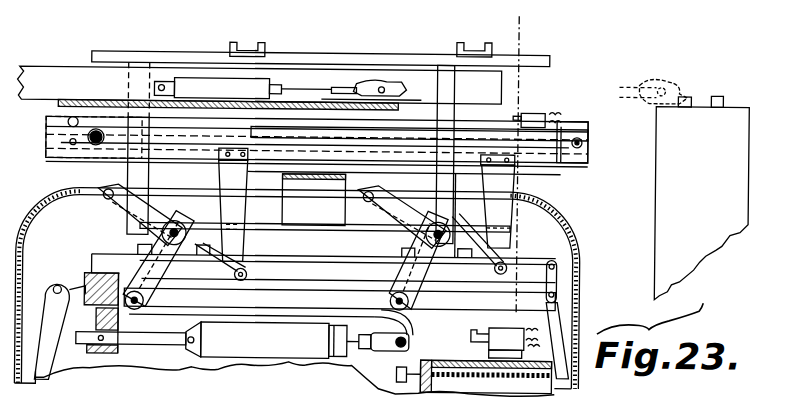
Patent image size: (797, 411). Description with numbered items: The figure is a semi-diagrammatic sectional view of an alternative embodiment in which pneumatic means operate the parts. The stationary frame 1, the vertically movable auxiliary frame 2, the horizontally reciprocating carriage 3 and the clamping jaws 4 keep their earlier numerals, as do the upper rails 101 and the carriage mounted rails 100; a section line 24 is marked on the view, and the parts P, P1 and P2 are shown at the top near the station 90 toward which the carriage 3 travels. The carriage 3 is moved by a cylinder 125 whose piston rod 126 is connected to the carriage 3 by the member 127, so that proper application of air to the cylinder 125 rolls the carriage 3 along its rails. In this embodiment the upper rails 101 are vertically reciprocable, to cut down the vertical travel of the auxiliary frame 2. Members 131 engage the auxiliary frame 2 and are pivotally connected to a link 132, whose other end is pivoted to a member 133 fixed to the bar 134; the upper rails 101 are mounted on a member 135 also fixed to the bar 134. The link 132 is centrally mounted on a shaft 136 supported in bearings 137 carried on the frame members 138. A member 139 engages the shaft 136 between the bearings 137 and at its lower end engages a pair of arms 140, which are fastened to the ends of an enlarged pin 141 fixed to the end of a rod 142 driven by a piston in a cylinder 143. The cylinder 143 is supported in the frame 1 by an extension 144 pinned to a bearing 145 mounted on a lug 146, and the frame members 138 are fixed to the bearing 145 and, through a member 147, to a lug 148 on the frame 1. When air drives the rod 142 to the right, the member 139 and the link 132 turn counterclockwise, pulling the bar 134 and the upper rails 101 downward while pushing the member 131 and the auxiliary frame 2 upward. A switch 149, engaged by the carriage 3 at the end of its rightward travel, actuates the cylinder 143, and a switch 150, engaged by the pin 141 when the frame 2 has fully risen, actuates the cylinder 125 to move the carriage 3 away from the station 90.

The stationary frame 1 is at (580, 228).
The vertically movable auxiliary frame 2 is at (570, 161).
The horizontally reciprocating carriage 3 is at (112, 102).
The clamping jaws 4 is at (396, 83).
The section line 24 is at (506, 25).
The station 90 is at (748, 122).
The carriage mounted rails 100 is at (62, 78).
The upper rails 101 is at (370, 55).
The cylinder 125 is at (468, 127).
The rod 126 is at (180, 143).
The member 127 is at (78, 158).
The members 131 is at (284, 174).
The link 132 is at (210, 218).
The member 133 is at (98, 216).
The bar 134 is at (326, 240).
The member 135 is at (128, 172).
The shaft 136 is at (160, 239).
The bearings 137 is at (218, 275).
The frame members 138 is at (312, 263).
The member 139 is at (162, 272).
The arms 140 is at (344, 296).
The enlarged pin 141 is at (402, 350).
The rod 142 is at (356, 349).
The cylinder 143 is at (300, 359).
The extension 144 is at (162, 349).
The bearing 145 is at (82, 282).
The lug 146 is at (56, 350).
The member 147 is at (557, 276).
The lug 148 is at (558, 318).
The switch 149 is at (542, 110).
The switch 150 is at (488, 338).
The part P is at (720, 92).
The clip part P1 is at (456, 43).
The clip part P2 is at (238, 45).